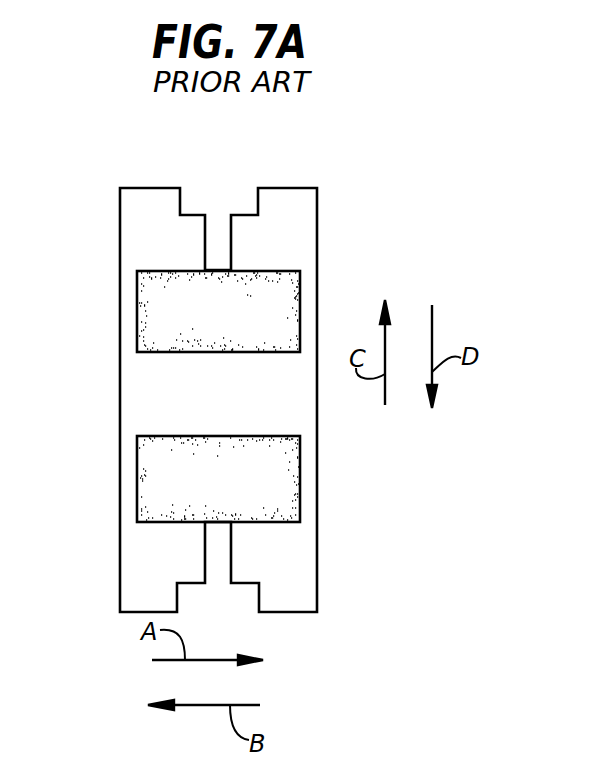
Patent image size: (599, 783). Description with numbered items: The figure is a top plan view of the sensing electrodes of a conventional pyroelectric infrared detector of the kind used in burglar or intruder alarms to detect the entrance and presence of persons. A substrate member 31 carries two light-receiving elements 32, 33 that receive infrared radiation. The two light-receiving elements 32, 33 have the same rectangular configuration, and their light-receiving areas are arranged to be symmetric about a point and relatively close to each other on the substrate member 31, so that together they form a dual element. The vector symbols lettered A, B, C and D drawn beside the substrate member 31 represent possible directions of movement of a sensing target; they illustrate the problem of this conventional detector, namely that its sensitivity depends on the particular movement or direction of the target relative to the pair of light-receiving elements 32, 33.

The substrate member 31 is at (288, 188).
The light-receiving element 32 is at (137, 313).
The light-receiving element 33 is at (137, 470).